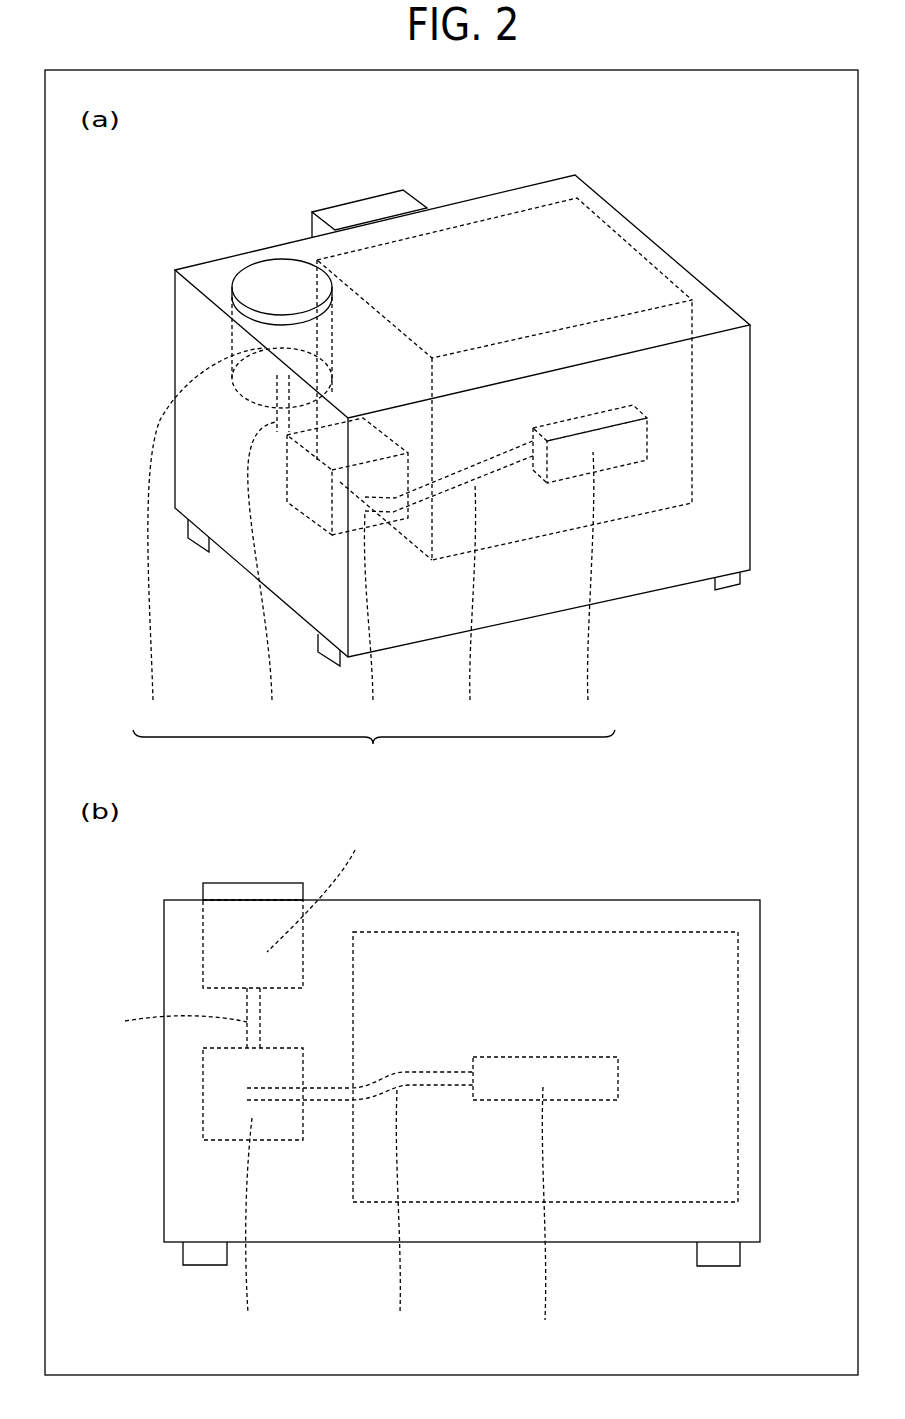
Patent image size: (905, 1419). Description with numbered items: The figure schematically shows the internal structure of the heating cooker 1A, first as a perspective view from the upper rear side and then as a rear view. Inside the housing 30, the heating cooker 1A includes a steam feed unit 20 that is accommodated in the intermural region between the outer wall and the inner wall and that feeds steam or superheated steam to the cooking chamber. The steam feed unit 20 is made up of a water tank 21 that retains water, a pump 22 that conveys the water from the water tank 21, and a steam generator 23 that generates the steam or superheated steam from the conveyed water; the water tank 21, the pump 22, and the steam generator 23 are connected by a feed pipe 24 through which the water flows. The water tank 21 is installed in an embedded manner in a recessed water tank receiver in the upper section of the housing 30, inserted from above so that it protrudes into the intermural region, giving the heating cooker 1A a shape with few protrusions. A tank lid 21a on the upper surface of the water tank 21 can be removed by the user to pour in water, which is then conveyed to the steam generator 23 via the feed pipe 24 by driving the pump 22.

The heating cooker 1A is at (754, 157).
The steam feed unit 20 is at (374, 758).
The water tank 21 is at (252, 642).
The tank lid 21a is at (277, 290).
The pump 22 is at (305, 885).
The steam generator 23 is at (560, 878).
The feed pipe 24 is at (316, 863).
The housing 30 is at (670, 256).